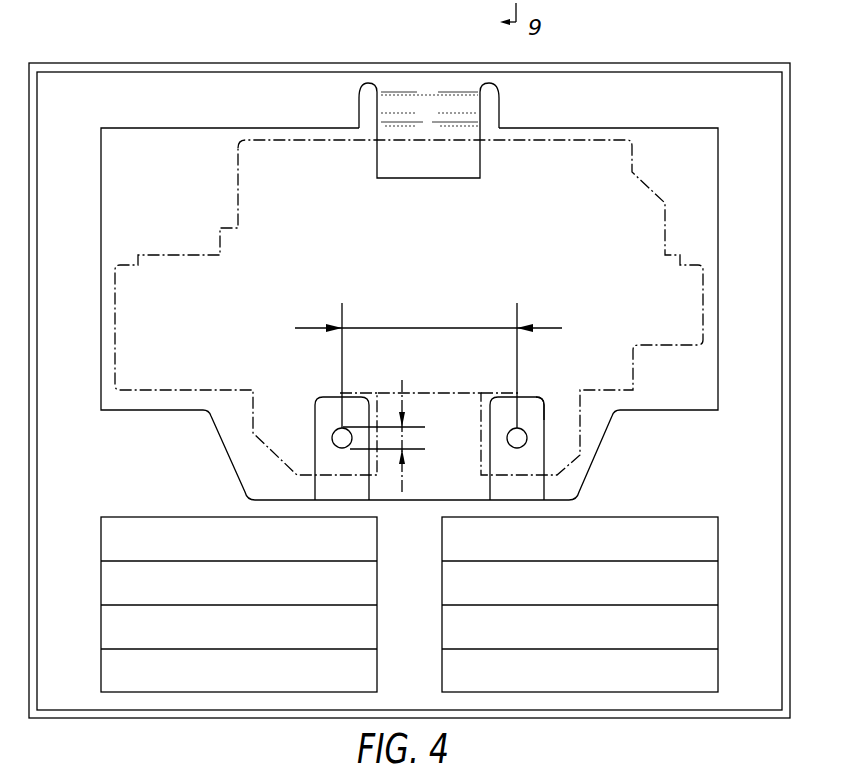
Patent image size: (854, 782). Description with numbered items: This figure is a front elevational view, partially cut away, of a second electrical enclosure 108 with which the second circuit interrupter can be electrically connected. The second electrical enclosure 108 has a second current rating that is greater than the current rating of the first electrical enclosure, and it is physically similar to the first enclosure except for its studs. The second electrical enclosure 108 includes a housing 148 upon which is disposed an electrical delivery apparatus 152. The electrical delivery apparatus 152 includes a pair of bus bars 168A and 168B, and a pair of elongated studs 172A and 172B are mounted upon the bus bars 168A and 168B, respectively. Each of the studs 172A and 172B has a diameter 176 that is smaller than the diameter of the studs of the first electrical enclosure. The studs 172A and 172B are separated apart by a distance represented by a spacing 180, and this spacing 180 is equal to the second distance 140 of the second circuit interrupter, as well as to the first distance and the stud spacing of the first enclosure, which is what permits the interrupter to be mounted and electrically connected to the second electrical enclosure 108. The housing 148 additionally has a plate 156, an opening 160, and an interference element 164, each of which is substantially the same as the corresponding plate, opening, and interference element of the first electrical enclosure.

The second electrical enclosure 108 is at (667, 55).
The second distance 140 is at (413, 5).
The housing 148 is at (794, 84).
The electrical delivery apparatus 152 is at (541, 397).
The plate 156 is at (580, 132).
The opening 160 is at (718, 153).
The interference element 164 is at (430, 180).
The bus bar 168A is at (317, 397).
The bus bar 168B is at (547, 405).
The stud 172A is at (332, 442).
The stud 172B is at (506, 440).
The diameter 176 is at (405, 438).
The spacing 180 is at (408, 327).